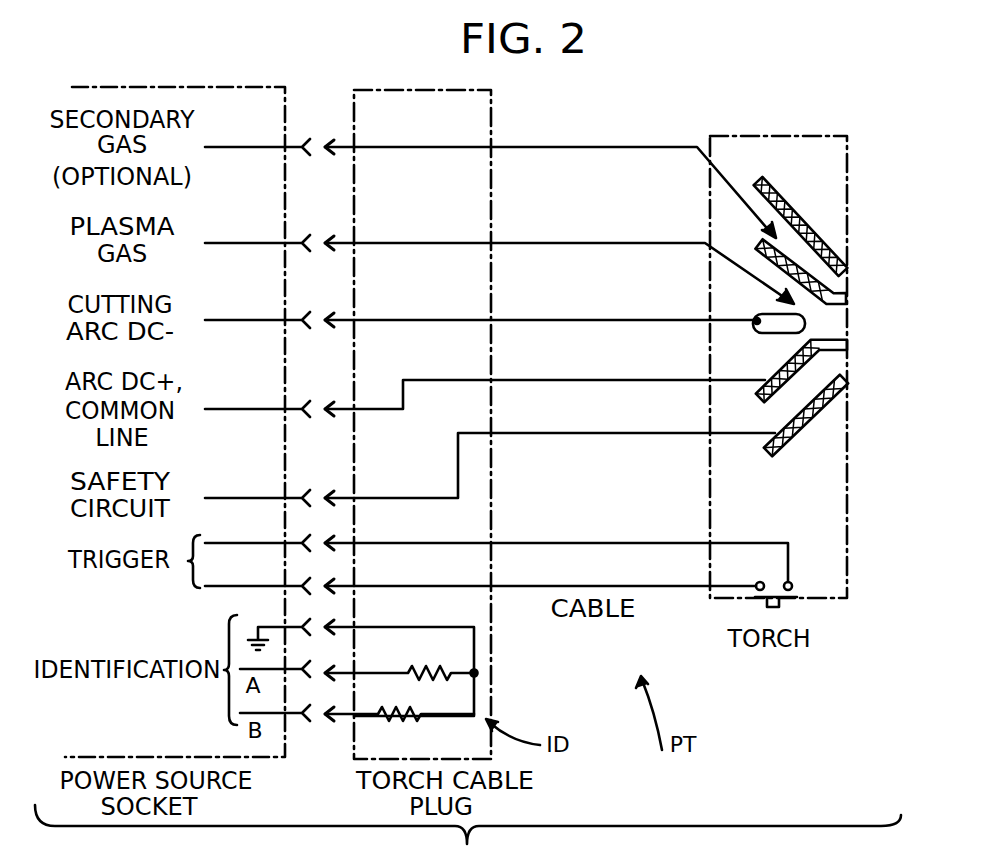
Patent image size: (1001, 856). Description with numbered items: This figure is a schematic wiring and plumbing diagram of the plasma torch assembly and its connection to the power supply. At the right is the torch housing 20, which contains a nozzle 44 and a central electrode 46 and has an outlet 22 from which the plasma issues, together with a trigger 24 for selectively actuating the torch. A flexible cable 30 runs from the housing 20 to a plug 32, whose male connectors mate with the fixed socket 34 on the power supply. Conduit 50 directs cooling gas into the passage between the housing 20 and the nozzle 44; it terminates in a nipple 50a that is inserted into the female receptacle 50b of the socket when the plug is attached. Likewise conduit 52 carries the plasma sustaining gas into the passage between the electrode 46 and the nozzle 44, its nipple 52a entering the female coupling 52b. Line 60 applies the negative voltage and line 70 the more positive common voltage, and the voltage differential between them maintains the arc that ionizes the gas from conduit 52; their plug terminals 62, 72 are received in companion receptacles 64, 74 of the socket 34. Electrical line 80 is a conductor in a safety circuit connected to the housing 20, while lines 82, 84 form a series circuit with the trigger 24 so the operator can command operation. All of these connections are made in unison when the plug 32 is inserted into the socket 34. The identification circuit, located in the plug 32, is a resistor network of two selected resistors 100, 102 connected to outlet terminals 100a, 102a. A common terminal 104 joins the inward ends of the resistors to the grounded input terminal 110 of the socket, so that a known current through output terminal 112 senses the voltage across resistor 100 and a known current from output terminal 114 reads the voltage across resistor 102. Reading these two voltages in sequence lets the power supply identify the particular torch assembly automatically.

The housing 20 is at (800, 212).
The outlet 22 is at (842, 323).
The trigger 24 is at (782, 606).
The flexible cable 30 is at (645, 137).
The plug 32 is at (370, 88).
The socket 34 is at (248, 85).
The nozzle 44 is at (832, 300).
The central electrode 46 is at (757, 333).
The conduit 50 is at (598, 147).
The nipple 50a is at (331, 141).
The female receptacle 50b is at (307, 140).
The conduit 52 is at (603, 243).
The nipple 52a is at (331, 237).
The female coupling 52b is at (307, 236).
The line 60 is at (515, 320).
The connector 62 is at (331, 313).
The receptacle 64 is at (306, 313).
The line 70 is at (523, 380).
The terminal 72 is at (331, 401).
The receptacle 74 is at (306, 403).
The line 80 is at (537, 433).
The line 82 is at (540, 543).
The line 84 is at (545, 586).
The resistor 100 is at (440, 673).
The outlet terminal 100a is at (331, 667).
The resistor 102 is at (408, 712).
The outlet terminal 102a is at (331, 720).
The common terminal 104 is at (331, 621).
The input terminal 110 is at (305, 622).
The output terminal 112 is at (303, 672).
The output terminal 114 is at (306, 718).